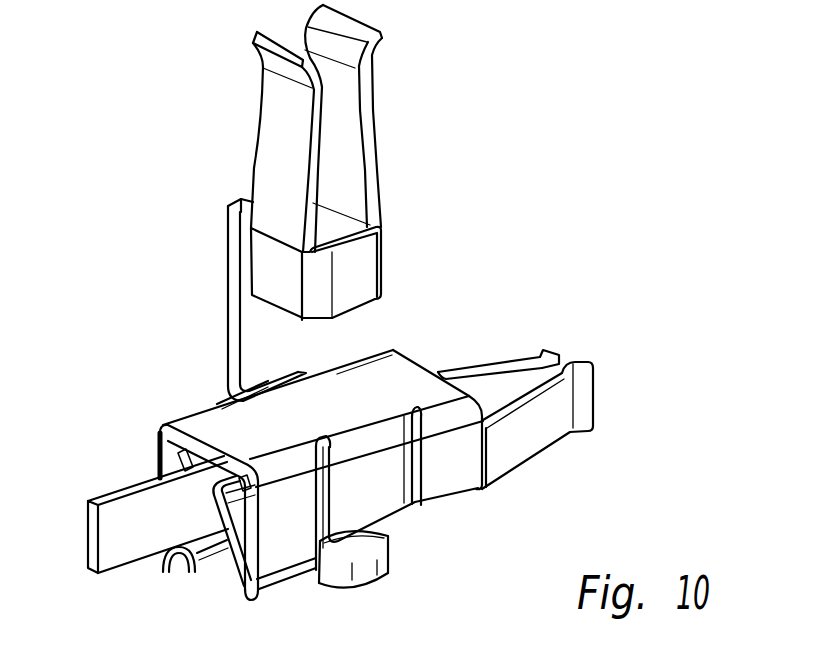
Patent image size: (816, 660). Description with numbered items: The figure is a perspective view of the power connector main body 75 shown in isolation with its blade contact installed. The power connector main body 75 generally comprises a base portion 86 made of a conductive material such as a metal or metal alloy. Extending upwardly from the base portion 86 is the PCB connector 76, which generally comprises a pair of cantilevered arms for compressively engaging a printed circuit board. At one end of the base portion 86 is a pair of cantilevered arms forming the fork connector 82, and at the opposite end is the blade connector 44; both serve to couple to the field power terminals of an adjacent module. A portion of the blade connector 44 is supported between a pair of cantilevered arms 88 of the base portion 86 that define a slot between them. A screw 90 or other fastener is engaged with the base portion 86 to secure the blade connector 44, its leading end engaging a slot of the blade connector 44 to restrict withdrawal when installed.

The blade connector 44 is at (133, 518).
The power connector main body 75 is at (402, 378).
The PCB connector 76 is at (366, 144).
The fork connector 82 is at (513, 433).
The base portion 86 is at (360, 485).
The cantilevered arms 88 is at (243, 552).
The screw 90 is at (366, 567).